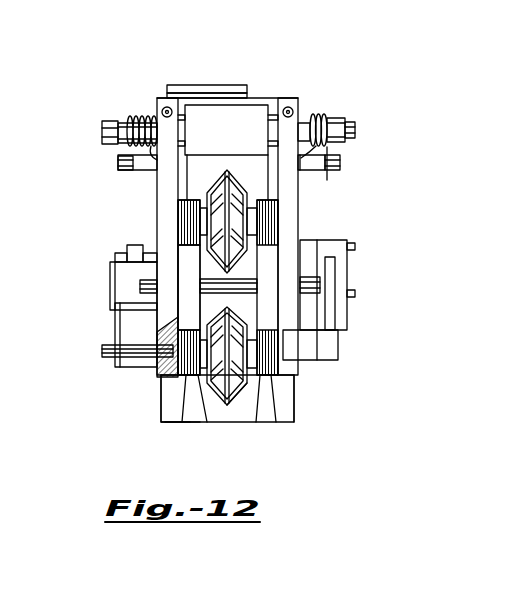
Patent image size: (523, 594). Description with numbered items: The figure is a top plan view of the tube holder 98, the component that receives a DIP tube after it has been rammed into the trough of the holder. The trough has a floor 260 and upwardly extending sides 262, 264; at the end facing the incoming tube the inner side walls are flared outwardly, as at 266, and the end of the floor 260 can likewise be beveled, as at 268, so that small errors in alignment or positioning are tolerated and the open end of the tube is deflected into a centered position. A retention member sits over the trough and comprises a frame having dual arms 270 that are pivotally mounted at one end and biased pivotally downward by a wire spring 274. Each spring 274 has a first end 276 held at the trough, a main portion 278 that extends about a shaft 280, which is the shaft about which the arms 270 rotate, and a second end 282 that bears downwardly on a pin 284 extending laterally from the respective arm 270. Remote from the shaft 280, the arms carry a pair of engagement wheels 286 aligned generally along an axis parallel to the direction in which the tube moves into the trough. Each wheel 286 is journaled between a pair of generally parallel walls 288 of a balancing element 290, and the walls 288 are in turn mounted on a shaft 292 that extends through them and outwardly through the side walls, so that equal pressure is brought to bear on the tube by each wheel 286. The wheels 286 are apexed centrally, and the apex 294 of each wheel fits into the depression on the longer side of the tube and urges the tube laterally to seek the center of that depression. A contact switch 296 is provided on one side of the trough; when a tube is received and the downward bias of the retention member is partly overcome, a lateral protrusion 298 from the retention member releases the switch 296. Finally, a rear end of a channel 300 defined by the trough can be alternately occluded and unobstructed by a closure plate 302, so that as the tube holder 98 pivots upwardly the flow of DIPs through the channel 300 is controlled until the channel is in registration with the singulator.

The tube holder 98 is at (367, 154).
The floor 260 is at (205, 412).
The side 262 is at (160, 405).
The side 264 is at (295, 388).
The flared inner side walls 266 is at (192, 396).
The beveled end of trough floor 268 is at (188, 412).
The frame arms 270 is at (155, 209).
The wire spring 274 is at (132, 103).
The first end 276 is at (290, 106).
The main portion 278 is at (112, 126).
The shaft 280 is at (350, 120).
The second end 282 is at (125, 174).
The pin 284 is at (303, 171).
The engagement wheel 286 is at (229, 170).
The walls 288 is at (265, 255).
The balancing element 290 is at (174, 240).
The shaft 292 is at (112, 264).
The apex 294 is at (228, 170).
The contact switch 296 is at (327, 318).
The lateral protrusion 298 is at (330, 350).
The channel 300 is at (252, 405).
The closure plate 302 is at (201, 85).